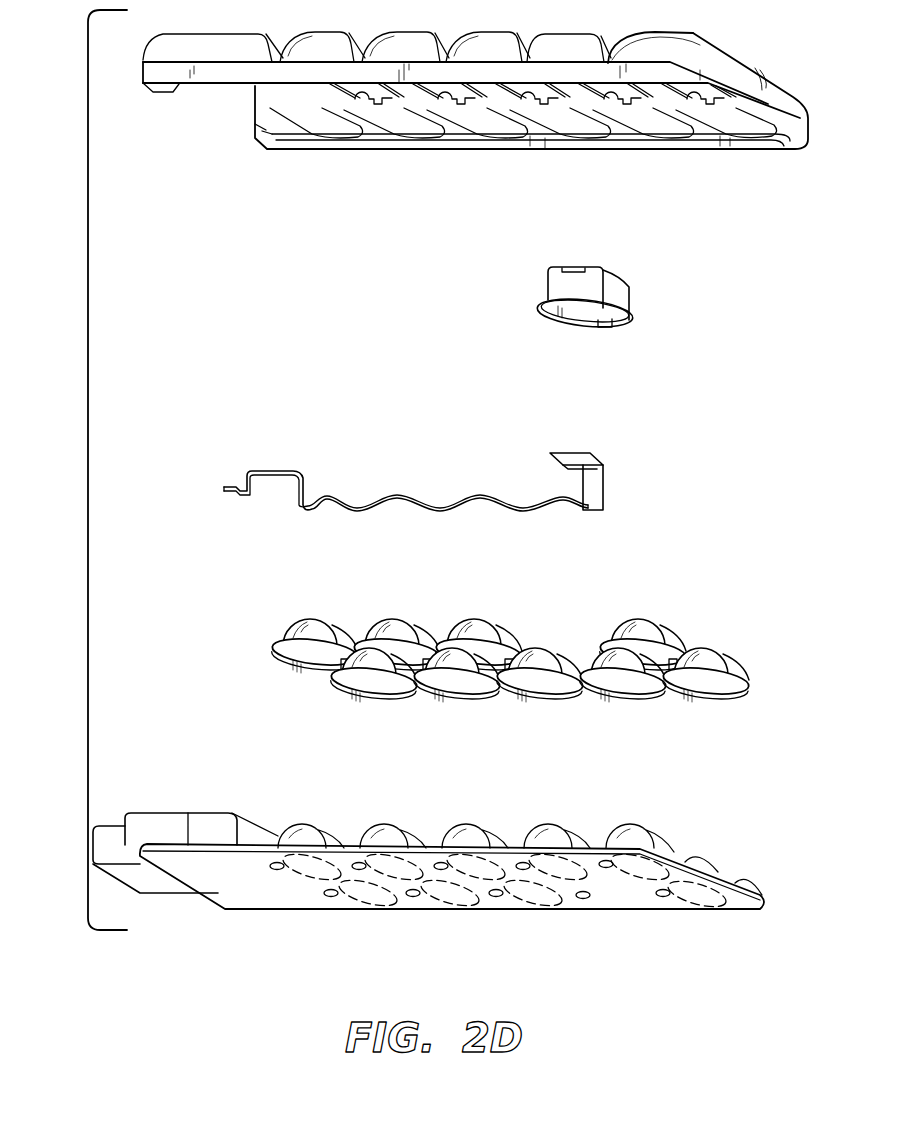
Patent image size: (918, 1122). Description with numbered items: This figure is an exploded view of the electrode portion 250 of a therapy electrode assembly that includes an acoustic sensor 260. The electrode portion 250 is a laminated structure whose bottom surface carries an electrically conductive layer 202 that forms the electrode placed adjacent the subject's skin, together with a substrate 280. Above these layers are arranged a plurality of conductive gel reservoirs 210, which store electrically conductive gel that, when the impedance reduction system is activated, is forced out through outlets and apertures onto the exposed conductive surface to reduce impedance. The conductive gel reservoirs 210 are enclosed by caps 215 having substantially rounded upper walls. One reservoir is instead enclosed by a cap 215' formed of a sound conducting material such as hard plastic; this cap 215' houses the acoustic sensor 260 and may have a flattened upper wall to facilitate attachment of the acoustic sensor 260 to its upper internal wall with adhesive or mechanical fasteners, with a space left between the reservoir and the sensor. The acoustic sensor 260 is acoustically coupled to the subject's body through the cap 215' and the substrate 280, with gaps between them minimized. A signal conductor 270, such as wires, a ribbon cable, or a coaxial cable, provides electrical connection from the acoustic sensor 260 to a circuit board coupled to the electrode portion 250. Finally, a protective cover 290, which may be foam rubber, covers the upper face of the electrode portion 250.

The electrode portion 250 is at (88, 463).
The protective cover 290 is at (353, 150).
The cap 215' is at (632, 294).
The signal conductor 270 is at (468, 501).
The acoustic sensor 260 is at (598, 461).
The caps 215 is at (504, 646).
The conductive gel reservoirs 210 is at (630, 829).
The electrically conductive layer 202 is at (232, 875).
The substrate 280 is at (332, 910).